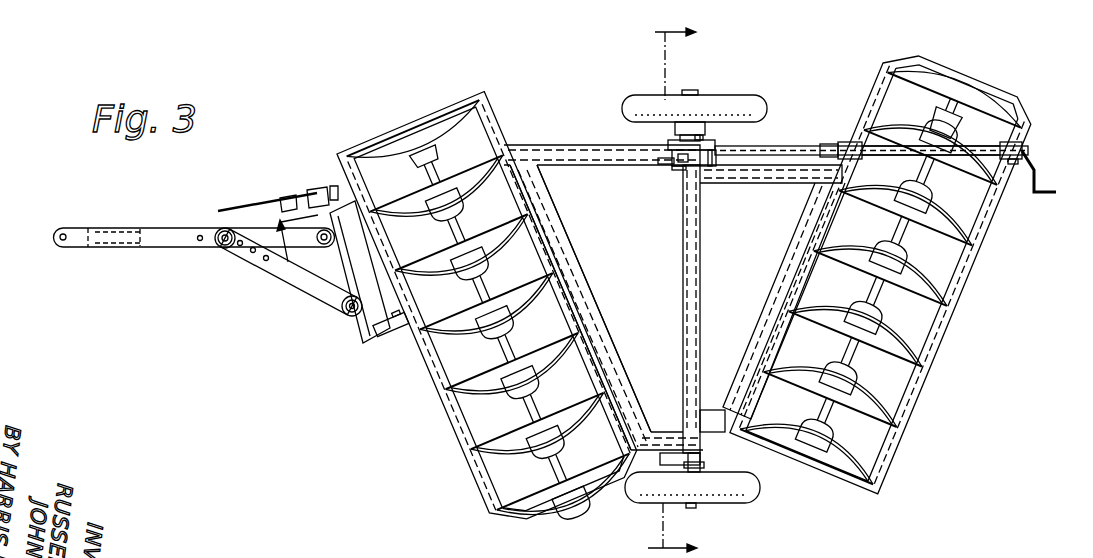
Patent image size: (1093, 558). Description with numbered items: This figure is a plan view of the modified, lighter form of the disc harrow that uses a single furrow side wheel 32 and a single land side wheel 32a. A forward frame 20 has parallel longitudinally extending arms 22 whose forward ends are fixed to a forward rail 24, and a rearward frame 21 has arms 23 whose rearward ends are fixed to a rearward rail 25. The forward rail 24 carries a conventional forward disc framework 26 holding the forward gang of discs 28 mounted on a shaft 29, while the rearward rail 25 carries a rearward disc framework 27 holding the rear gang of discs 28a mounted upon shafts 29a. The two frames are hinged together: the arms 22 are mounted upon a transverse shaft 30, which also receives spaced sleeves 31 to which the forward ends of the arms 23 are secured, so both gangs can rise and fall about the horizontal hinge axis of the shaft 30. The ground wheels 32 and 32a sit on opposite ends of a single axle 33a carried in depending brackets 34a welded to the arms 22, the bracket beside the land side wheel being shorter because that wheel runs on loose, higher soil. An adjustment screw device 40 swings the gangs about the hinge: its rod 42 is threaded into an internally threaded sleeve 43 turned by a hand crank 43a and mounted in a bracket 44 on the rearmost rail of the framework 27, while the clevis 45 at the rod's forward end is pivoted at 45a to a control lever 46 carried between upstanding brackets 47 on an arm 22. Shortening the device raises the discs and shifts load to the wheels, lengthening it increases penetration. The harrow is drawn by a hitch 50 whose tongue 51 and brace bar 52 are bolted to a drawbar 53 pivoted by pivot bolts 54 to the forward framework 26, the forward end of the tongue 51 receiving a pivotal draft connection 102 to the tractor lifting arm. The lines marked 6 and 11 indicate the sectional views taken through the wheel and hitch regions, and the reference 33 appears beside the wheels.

The pivotal draft connection 102 is at (68, 226).
The hitch 50 is at (229, 277).
The tongue 51 is at (192, 218).
The brace bar 52 is at (290, 276).
The drawbar 53 is at (355, 330).
The pivot bolts 54 is at (390, 338).
The forward disc framework 26 is at (490, 317).
The forward gang of discs 28 is at (515, 438).
The shaft 29 is at (535, 402).
The forward rail 24 is at (604, 336).
The arms 22 is at (553, 155).
The forward frame 20 is at (674, 299).
The transverse shaft 30 is at (680, 140).
The sleeves 31 is at (702, 243).
The rearward rail 25 is at (786, 277).
The rearward frame 21 is at (876, 269).
The arms 23 is at (776, 178).
The axle 33a is at (690, 93).
The land side wheel 32a is at (748, 100).
The tire 33 is at (703, 292).
The upstanding brackets 47 is at (670, 148).
The clevis 45 is at (716, 150).
The rod 42 is at (899, 167).
The adjustment screw device 40 is at (828, 150).
The pivotal connection 45a is at (678, 160).
The control lever 46 is at (683, 168).
The internally threaded sleeve 43 is at (930, 165).
The hand crank 43a is at (1036, 186).
The bracket 44 is at (1012, 165).
The rearward gang of discs 28a is at (918, 283).
The shafts 29a is at (862, 366).
The rearward disc framework 27 is at (970, 302).
The depending brackets 34a is at (668, 455).
The furrow side wheel 32 is at (748, 502).
The section line 6- 6 is at (664, 290).
The section line 11- 11 is at (318, 241).